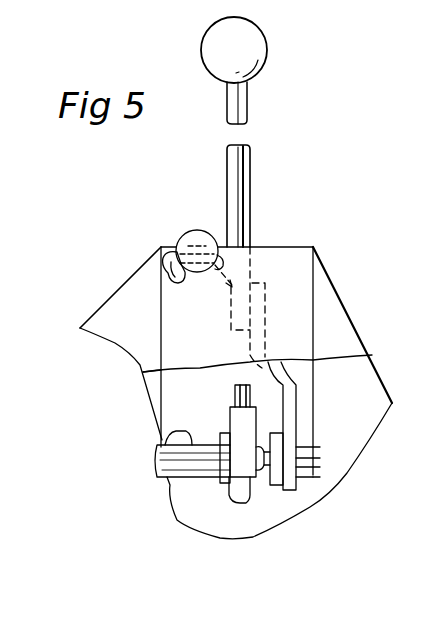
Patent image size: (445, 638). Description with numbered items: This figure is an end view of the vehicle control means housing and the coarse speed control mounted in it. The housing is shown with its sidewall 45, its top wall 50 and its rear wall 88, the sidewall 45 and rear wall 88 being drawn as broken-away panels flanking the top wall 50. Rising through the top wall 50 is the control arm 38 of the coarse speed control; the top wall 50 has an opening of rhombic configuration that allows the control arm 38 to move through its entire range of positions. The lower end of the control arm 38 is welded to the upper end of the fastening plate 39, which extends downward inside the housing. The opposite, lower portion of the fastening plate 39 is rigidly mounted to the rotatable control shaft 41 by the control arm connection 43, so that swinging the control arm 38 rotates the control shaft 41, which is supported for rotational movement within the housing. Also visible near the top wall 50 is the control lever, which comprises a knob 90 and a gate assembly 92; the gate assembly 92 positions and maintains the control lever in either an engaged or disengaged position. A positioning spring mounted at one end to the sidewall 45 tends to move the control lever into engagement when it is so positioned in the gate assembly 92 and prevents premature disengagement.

The control arm 38 is at (250, 172).
The fastening plate 39 is at (298, 390).
The rotatable control shaft 41 is at (165, 435).
The control arm connection 43 is at (313, 478).
The sidewall 45 is at (345, 308).
The top wall 50 is at (296, 243).
The rear wall 88 is at (175, 308).
The knob 90 is at (197, 232).
The gate assembly 92 is at (161, 247).